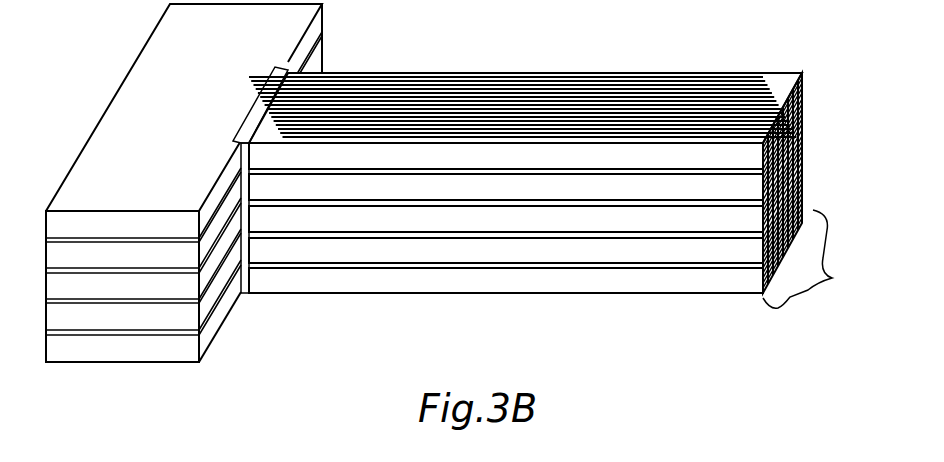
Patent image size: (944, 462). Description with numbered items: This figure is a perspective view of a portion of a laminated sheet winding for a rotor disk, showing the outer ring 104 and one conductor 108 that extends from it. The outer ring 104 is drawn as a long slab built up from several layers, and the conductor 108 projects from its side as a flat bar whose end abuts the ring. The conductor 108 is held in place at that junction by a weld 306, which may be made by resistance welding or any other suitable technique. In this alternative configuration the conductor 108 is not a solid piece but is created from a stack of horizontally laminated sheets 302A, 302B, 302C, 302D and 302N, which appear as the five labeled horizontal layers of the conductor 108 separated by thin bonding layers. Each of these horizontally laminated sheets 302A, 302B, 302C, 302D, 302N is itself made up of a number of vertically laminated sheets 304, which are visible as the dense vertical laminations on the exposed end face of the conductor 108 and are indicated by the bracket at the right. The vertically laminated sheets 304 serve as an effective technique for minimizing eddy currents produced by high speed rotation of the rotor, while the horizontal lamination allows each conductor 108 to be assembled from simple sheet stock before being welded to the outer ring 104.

The outer ring 104 is at (138, 78).
The weld 306 is at (285, 72).
The conductor 108 is at (525, 155).
The horizontally laminated sheet 302A is at (506, 156).
The horizontally laminated sheet 302B is at (506, 187).
The horizontally laminated sheet 302C is at (506, 219).
The horizontally laminated sheet 302D is at (506, 250).
The horizontally laminated sheet 302N is at (506, 280).
The vertically laminated sheets 304 is at (811, 259).